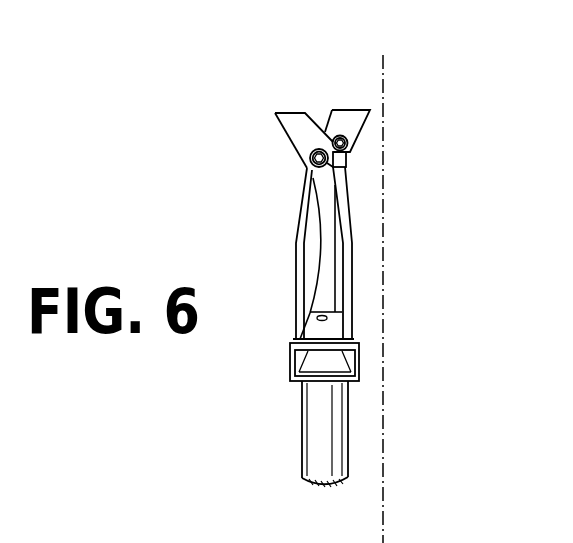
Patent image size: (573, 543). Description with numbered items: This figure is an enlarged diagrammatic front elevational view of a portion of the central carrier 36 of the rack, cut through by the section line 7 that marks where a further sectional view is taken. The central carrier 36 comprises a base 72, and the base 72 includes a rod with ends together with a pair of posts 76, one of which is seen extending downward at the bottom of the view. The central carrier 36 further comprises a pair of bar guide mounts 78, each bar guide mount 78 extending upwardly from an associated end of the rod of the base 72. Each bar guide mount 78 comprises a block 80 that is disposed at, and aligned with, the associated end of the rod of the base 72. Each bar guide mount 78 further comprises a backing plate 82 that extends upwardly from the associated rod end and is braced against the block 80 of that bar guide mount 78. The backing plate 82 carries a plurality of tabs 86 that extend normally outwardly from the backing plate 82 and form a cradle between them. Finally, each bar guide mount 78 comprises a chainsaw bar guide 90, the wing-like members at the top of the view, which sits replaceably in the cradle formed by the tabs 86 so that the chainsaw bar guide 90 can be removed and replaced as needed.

The section line 7- 7 is at (392, 68).
The central carrier 36 is at (270, 118).
The base 72 is at (284, 365).
The post 76 is at (321, 457).
The bar guide mount 78 is at (336, 105).
The block 80 is at (316, 332).
The backing plate 82 is at (303, 210).
The tab 86 is at (333, 130).
The chainsaw bar guide 90 is at (301, 127).